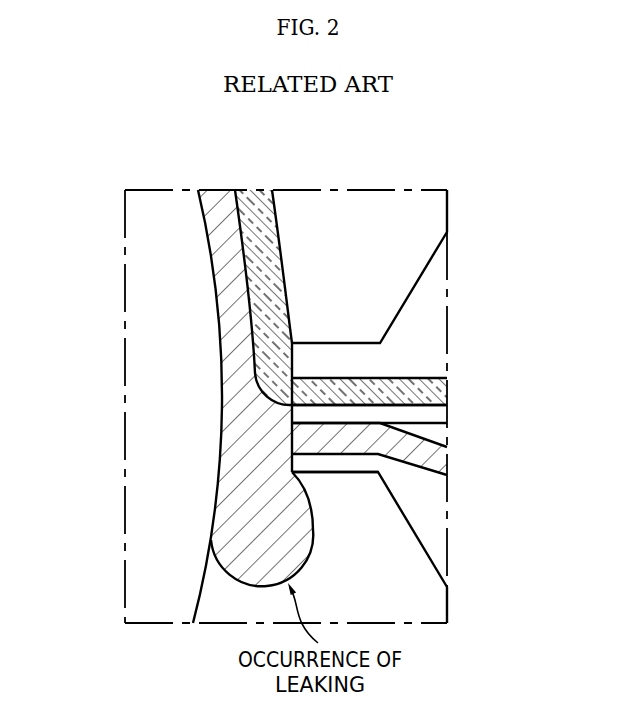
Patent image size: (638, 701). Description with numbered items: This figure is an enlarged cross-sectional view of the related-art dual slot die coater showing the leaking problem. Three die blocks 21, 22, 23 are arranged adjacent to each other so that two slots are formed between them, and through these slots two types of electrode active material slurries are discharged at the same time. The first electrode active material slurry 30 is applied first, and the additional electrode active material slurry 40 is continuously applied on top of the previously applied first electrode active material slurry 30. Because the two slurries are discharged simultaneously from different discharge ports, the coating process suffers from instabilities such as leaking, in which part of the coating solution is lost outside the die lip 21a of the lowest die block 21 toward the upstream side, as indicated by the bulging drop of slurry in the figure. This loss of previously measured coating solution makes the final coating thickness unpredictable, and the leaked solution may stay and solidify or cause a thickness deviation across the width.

The die block 21 is at (438, 518).
The die lip 21a is at (335, 465).
The die block 22 is at (438, 427).
The die block 23 is at (438, 330).
The first electrode active material slurry 30 is at (438, 458).
The additional electrode active material slurry 40 is at (438, 392).